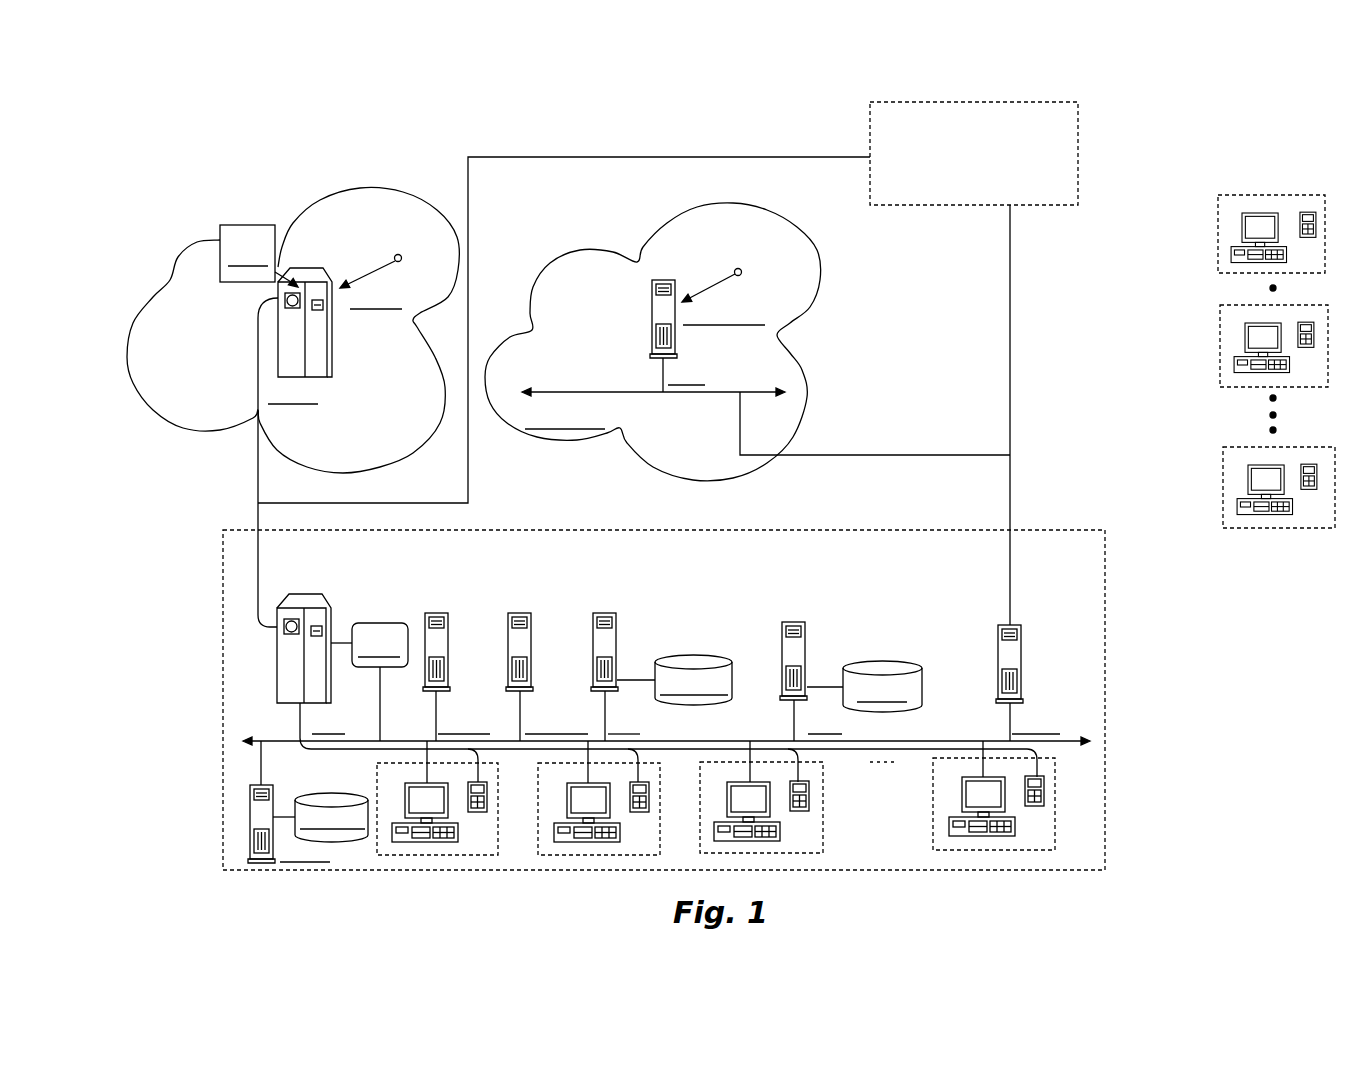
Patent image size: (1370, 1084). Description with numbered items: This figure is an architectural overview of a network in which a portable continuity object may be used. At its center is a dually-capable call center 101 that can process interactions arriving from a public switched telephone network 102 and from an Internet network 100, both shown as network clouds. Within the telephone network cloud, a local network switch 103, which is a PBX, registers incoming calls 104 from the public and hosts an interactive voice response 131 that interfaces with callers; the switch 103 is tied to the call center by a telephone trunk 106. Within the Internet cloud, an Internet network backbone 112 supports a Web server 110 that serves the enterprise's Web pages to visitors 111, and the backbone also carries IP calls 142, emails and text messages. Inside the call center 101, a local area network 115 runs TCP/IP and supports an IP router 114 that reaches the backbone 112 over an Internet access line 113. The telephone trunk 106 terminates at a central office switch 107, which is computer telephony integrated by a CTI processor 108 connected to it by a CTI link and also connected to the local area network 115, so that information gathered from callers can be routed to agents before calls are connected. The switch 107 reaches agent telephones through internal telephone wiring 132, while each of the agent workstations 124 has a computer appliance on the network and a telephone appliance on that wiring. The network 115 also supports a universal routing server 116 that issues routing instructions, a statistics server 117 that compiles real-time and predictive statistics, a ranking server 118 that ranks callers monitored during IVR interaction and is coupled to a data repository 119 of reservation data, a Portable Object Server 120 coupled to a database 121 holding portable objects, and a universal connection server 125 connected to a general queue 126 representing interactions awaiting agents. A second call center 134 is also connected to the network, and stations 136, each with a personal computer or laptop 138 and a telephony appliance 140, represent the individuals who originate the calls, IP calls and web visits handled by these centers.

The Internet network 100 is at (640, 225).
The call center 101 is at (216, 609).
The public switched telephone network 102 is at (195, 430).
The local network switch 103 is at (332, 368).
The calls 104 is at (365, 272).
The telephone trunk 106 is at (258, 498).
The central office switch 107 is at (302, 594).
The CTI processor 108 is at (388, 623).
The Web server 110 is at (652, 333).
The visitors 111 is at (713, 280).
The Internet network backbone 112 is at (610, 392).
The Internet access line 113 is at (878, 457).
The IP router 114 is at (1023, 670).
The local area network 115 is at (722, 738).
The universal routing server 116 is at (448, 663).
The statistics server 117 is at (532, 670).
The ranking server 118 is at (618, 665).
The data repository 119 is at (675, 655).
The Portable Object Server 120 is at (808, 668).
The database 121 is at (865, 665).
The agent workstations 124 is at (1080, 797).
The universal connection server 125 is at (293, 768).
The general queue 126 is at (313, 795).
The interactive voice response 131 is at (247, 225).
The internal telephone wiring 132 is at (300, 732).
The second call center 134 is at (862, 132).
The stations 136 is at (1218, 228).
The personal computers or laptops 138 is at (1263, 217).
The individual telephony appliances 140 is at (1310, 208).
The IP calls 142 is at (775, 286).